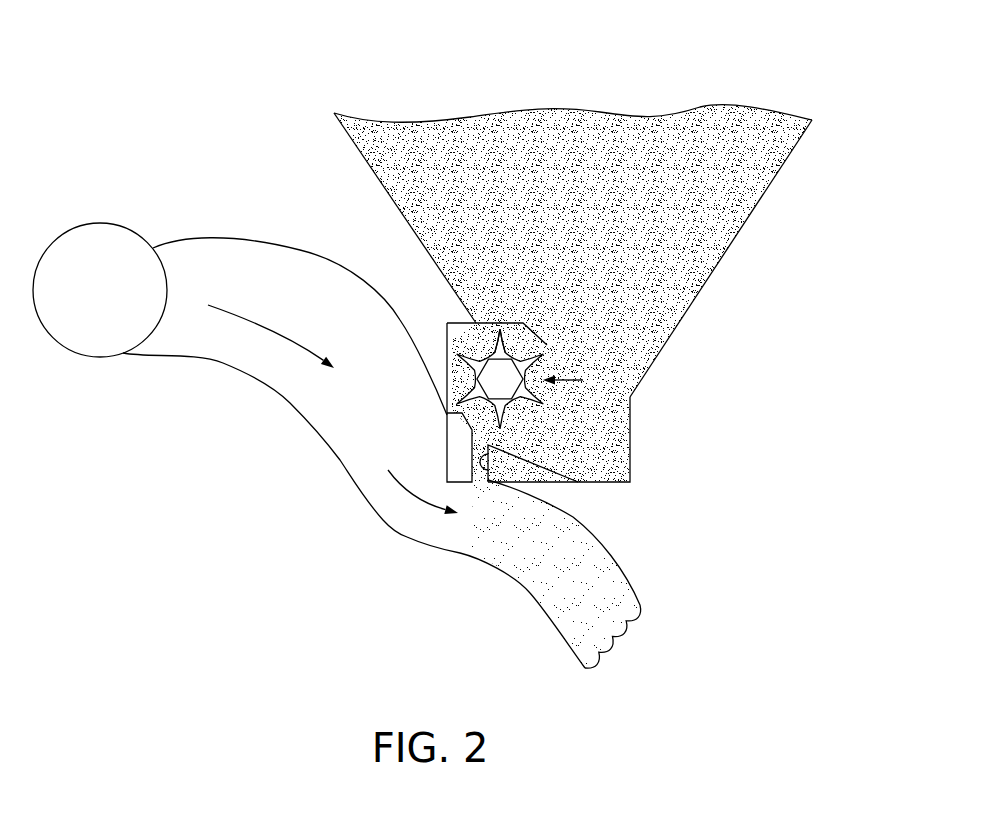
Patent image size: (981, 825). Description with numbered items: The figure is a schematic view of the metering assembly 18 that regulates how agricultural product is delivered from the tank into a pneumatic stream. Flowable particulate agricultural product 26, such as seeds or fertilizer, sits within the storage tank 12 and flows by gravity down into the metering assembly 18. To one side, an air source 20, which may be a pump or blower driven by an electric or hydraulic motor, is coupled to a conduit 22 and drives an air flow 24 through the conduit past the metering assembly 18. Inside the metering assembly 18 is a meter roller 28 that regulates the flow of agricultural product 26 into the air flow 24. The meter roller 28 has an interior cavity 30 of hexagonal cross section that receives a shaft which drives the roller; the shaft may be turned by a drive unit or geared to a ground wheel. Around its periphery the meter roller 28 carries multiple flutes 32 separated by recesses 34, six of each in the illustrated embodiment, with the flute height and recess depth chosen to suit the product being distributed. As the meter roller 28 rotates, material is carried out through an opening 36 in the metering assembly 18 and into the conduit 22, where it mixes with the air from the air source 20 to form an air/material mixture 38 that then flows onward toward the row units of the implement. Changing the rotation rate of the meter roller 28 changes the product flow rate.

The storage tank 12 is at (362, 150).
The metering assembly 18 is at (426, 312).
The air source 20 is at (100, 224).
The conduit 22 is at (318, 427).
The air flow 24 is at (270, 324).
The agricultural product 26 is at (745, 216).
The meter roller 28 is at (583, 380).
The interior cavity 30 is at (483, 394).
The flute 32 is at (468, 360).
The recess 34 is at (509, 356).
The opening 36 is at (540, 478).
The air/material mixture 38 is at (543, 580).